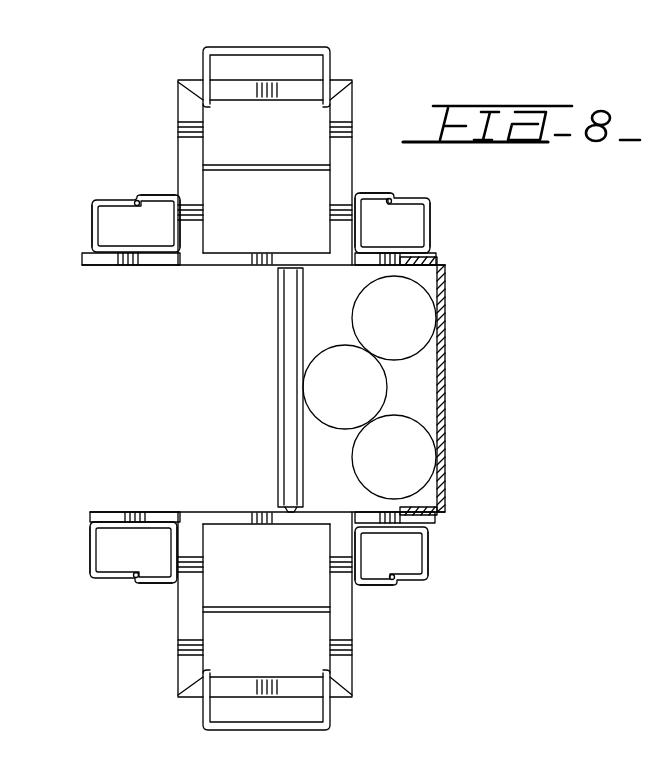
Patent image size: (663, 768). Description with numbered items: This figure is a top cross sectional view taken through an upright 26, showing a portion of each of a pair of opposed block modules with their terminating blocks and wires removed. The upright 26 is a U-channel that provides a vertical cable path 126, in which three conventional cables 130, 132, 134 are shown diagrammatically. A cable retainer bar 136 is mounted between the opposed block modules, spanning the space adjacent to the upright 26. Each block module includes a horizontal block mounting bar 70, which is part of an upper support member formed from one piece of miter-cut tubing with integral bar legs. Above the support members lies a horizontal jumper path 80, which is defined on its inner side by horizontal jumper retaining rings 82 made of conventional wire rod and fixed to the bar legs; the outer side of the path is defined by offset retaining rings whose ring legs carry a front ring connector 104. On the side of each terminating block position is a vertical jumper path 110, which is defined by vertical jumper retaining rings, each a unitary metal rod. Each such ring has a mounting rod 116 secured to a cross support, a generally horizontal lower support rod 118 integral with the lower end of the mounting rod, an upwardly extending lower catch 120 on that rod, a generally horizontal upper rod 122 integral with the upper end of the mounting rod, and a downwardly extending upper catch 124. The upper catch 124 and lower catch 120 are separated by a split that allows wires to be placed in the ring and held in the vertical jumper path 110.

The upright 26 is at (447, 352).
The horizontal block mounting bar 70 is at (288, 686).
The horizontal jumper path 80 is at (306, 128).
The horizontal jumper retaining ring 82 is at (291, 178).
The front ring connector 104 is at (278, 47).
The vertical jumper path 110 is at (118, 224).
The mounting rod 116 is at (148, 258).
The lower support rod 118 is at (92, 232).
The lower catch 120 is at (113, 199).
The upper rod 122 is at (183, 226).
The upper catch 124 is at (157, 195).
The vertical cable path 126 is at (362, 387).
The cable 130 is at (415, 315).
The cable 132 is at (318, 373).
The cable 134 is at (415, 462).
The cable retainer bar 136 is at (268, 322).